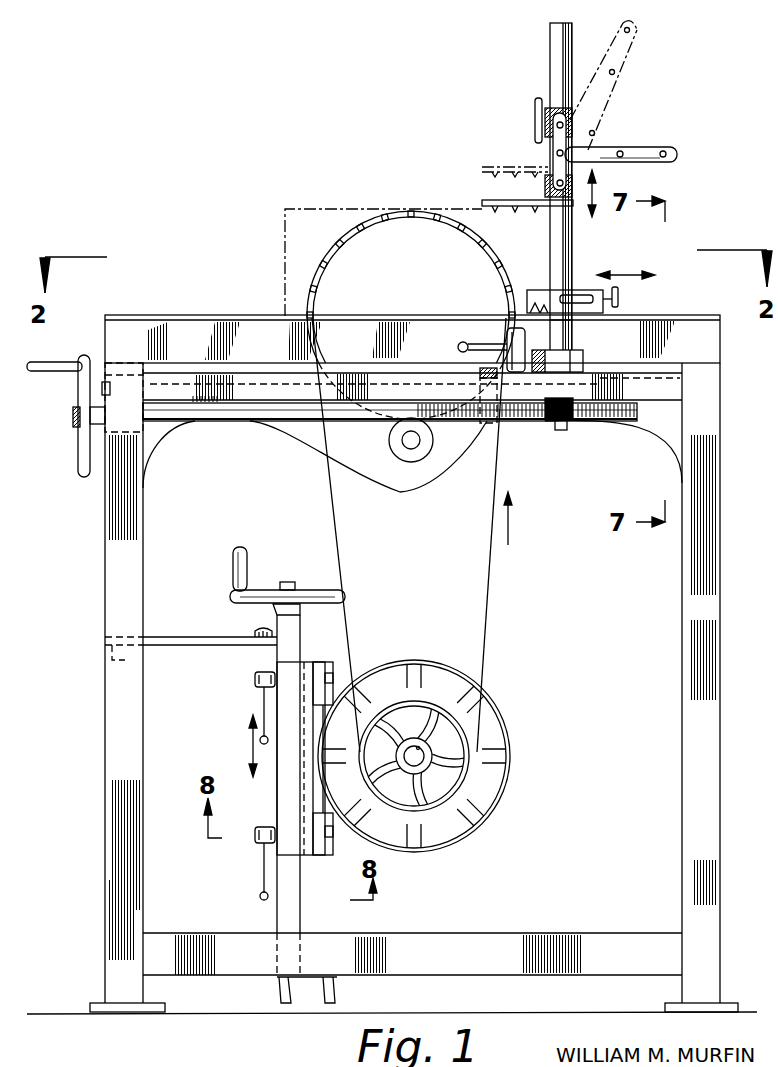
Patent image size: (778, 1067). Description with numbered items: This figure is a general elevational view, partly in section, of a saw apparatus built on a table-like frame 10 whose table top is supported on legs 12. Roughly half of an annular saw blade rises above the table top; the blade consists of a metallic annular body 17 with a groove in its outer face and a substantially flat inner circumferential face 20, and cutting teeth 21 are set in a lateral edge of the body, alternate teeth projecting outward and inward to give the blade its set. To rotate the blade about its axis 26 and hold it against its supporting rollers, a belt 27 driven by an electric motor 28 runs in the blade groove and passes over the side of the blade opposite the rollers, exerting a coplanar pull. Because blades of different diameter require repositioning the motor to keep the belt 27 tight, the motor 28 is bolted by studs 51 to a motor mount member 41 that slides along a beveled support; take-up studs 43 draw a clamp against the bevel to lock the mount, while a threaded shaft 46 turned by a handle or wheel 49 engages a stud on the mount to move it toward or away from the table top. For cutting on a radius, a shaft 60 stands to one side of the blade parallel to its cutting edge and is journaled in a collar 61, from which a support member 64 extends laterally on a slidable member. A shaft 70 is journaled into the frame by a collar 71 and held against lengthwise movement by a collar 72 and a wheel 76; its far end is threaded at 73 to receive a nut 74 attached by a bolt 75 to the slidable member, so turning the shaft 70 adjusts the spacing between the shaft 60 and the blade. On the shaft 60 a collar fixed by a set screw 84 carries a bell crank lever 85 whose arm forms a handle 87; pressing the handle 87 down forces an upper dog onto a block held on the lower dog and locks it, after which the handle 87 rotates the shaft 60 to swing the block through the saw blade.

The table-like frame 10 is at (174, 317).
The legs 12 is at (719, 683).
The metallic annular body 17 is at (352, 230).
The inner circumferential face 20 is at (455, 232).
The cutting teeth 21 is at (426, 209).
The axis 26 is at (415, 318).
The belt 27 is at (492, 606).
The electric motor 28 is at (511, 734).
The motor mount member 41 is at (276, 793).
The take-up studs 43 is at (256, 682).
The threaded shaft 46 is at (290, 583).
The handle or wheel 49 is at (232, 597).
The studs 51 is at (339, 663).
The shaft 60 is at (577, 36).
The collar 61 is at (573, 331).
The support member 64 is at (585, 360).
The shaft 70 is at (230, 422).
The collar 71 is at (123, 428).
The collar 72 is at (148, 430).
The threaded end 73 is at (597, 420).
The nut 74 is at (545, 423).
The bolt 75 is at (492, 369).
The wheel 76 is at (79, 462).
The set screw 84 is at (535, 104).
The bell crank lever 85 is at (585, 157).
The handle 87 is at (680, 151).